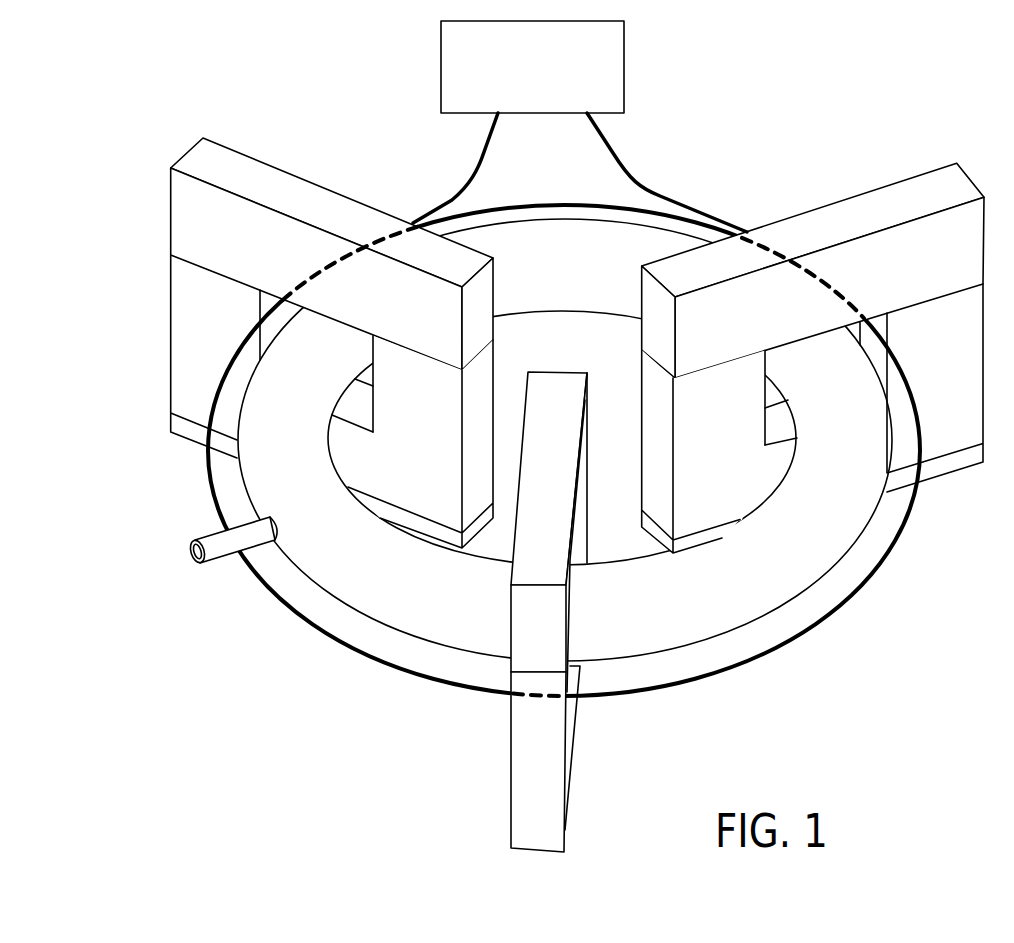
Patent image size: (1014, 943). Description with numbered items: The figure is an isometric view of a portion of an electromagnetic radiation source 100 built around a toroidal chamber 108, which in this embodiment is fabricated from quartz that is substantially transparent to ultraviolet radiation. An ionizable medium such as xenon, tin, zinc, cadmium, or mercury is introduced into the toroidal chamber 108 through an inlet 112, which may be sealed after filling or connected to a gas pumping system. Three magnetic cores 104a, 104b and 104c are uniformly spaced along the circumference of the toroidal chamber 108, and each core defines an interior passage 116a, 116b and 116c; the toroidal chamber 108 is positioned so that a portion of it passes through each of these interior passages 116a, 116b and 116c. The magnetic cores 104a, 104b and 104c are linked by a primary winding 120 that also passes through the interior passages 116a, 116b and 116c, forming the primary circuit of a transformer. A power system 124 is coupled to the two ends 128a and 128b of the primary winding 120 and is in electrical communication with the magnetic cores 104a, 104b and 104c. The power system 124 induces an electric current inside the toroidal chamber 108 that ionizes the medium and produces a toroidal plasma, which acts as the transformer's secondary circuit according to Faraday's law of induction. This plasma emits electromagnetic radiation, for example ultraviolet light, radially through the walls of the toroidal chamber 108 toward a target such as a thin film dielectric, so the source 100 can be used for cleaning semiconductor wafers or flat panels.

The electromagnetic radiation source 100 is at (295, 737).
The magnetic core 104a is at (345, 197).
The magnetic core 104b is at (810, 207).
The magnetic core 104c is at (510, 728).
The toroidal chamber 108 is at (780, 603).
The inlet 112 is at (210, 538).
The interior passage 116a is at (370, 377).
The interior passage 116b is at (772, 397).
The interior passage 116c is at (572, 633).
The primary winding 120 is at (297, 622).
The power system 124 is at (625, 71).
The end of primary winding 128a is at (482, 152).
The end of primary winding 128b is at (617, 150).